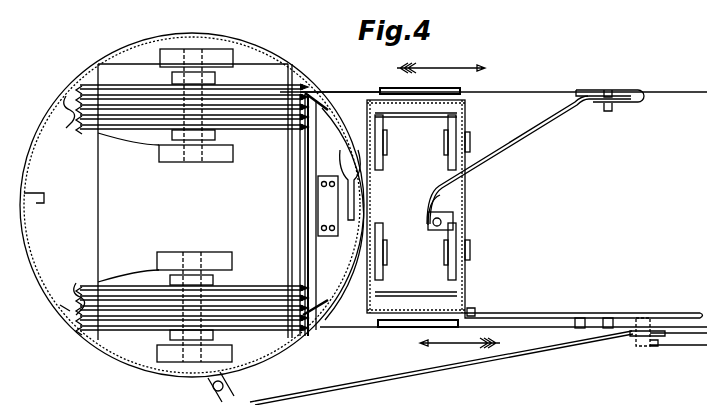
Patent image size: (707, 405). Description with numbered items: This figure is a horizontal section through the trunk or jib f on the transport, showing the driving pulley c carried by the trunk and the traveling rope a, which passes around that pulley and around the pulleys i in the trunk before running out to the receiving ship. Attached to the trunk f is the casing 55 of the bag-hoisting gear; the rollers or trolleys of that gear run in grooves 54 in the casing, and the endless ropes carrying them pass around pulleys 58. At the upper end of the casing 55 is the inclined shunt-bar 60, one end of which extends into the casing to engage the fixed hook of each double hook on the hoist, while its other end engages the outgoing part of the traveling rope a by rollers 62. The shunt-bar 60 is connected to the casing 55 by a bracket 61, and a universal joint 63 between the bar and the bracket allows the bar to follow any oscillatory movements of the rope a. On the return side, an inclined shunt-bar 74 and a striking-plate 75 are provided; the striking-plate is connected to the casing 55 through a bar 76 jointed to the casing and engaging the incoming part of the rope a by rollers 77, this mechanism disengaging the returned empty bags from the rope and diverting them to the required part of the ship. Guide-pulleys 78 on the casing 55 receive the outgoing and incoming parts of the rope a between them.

The grooves 54 is at (456, 112).
The casing 55 is at (467, 134).
The pulleys 58 is at (456, 157).
The shunt-bar 60 is at (527, 142).
The bracket 61 is at (462, 218).
The rollers 62 is at (606, 90).
The universal joint 63 is at (428, 220).
The inclined shunt-bar 74 is at (480, 366).
The striking-plate 75 is at (630, 338).
The bar 76 is at (538, 316).
The rollers 77 is at (606, 318).
The guide-pulleys 78 is at (382, 88).
The traveling rope a is at (503, 209).
The pulley c is at (316, 158).
The trunk or jib f is at (28, 236).
The pulleys i is at (45, 105).